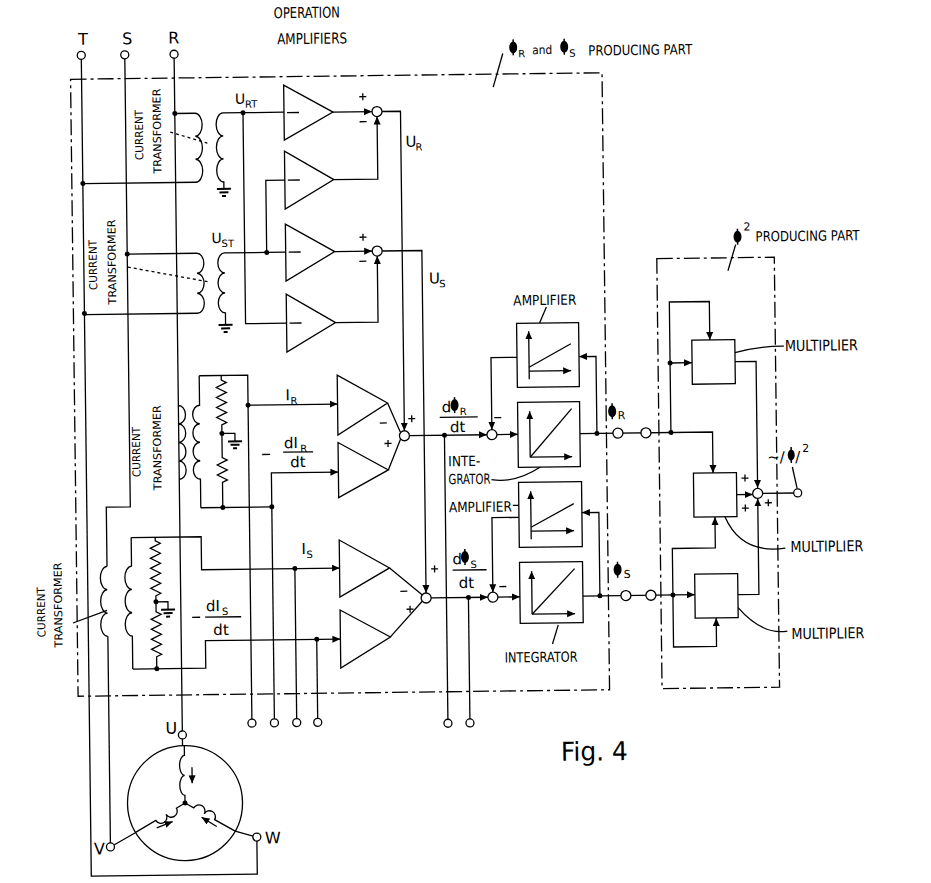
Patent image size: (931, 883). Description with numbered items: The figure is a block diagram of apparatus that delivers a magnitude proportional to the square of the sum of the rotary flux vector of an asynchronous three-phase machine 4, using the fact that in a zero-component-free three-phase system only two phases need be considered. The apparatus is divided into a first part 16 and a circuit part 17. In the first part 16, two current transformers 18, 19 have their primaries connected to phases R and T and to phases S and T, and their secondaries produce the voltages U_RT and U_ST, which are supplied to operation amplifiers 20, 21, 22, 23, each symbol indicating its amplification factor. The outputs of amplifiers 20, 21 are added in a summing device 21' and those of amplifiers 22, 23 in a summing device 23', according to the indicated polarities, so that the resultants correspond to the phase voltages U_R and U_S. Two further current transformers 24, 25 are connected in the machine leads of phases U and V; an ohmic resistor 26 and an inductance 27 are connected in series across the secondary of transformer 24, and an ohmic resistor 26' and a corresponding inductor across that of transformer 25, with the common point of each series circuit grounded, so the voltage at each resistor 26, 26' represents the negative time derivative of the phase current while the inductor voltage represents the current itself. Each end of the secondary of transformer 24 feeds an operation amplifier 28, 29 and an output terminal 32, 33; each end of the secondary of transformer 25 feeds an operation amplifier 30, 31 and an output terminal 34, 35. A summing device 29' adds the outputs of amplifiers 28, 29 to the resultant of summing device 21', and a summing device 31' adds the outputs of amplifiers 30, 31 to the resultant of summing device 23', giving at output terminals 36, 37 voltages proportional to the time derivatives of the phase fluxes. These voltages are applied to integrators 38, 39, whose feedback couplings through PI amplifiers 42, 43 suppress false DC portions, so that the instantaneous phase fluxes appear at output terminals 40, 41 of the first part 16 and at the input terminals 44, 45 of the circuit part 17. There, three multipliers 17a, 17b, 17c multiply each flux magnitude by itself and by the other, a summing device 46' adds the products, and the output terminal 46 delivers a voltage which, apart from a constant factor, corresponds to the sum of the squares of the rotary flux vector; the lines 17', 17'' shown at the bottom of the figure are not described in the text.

The asynchronous machine 4 is at (236, 778).
The first part 16 is at (483, 74).
The circuit part 17 is at (717, 455).
The output line 17' is at (218, 785).
The output line 17'' is at (291, 784).
The multiplier 17a is at (712, 387).
The multiplier 17b is at (723, 476).
The multiplier 17c is at (721, 614).
The current transformer 18 is at (205, 114).
The current transformer 19 is at (214, 298).
The operation amplifier 20 is at (312, 96).
The operation amplifier 21 is at (310, 175).
The summing device 21' is at (370, 133).
The operation amplifier 22 is at (312, 236).
The operation amplifier 23 is at (311, 317).
The summing device 23' is at (365, 271).
The current transformer 24 is at (183, 414).
The current transformer 25 is at (116, 574).
The ohmic resistor 26 is at (233, 389).
The ohmic resistor 26' is at (161, 556).
The inductance 27 is at (198, 551).
The operation amplifier 28 is at (369, 391).
The operation amplifier 29 is at (365, 473).
The summing device 29' is at (401, 441).
The operation amplifier 30 is at (374, 558).
The operation amplifier 31 is at (370, 642).
The summing device 31' is at (414, 601).
The output terminal 32 is at (249, 579).
The output terminal 33 is at (273, 630).
The output terminal 34 is at (296, 659).
The output terminal 35 is at (317, 695).
The output terminal 36 is at (446, 594).
The output terminal 37 is at (470, 674).
The integrator 38 is at (518, 456).
The integrator 39 is at (518, 621).
The output terminal 40 is at (618, 446).
The output terminal 41 is at (620, 607).
The amplifier 42 is at (518, 336).
The amplifier 43 is at (518, 486).
The input terminal 44 is at (646, 447).
The input terminal 45 is at (648, 607).
The output terminal 46 is at (782, 507).
The summing device 46' is at (752, 510).